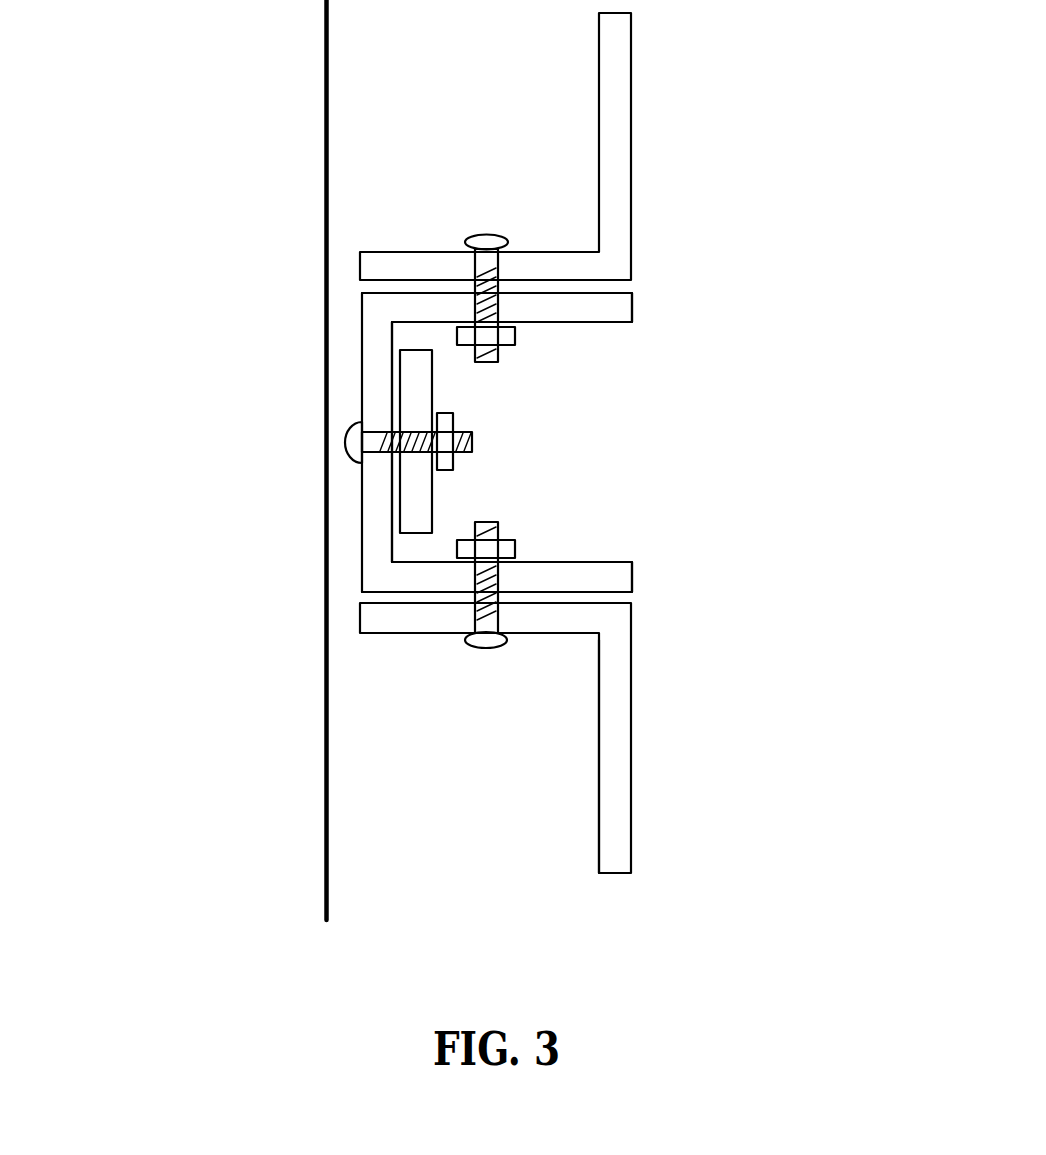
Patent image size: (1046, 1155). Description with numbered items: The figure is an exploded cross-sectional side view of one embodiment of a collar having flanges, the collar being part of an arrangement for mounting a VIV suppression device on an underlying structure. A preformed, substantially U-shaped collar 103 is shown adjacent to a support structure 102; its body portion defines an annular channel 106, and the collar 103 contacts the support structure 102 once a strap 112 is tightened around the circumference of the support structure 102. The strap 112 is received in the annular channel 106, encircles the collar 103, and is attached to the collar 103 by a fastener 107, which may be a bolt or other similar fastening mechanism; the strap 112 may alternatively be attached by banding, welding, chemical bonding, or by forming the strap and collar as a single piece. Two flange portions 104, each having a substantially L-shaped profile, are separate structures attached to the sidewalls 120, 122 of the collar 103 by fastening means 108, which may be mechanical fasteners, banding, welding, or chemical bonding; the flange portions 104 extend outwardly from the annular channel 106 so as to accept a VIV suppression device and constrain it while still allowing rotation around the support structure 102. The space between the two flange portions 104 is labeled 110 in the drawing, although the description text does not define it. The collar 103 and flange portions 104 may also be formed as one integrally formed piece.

The support structure 102 is at (318, 272).
The collar 103 is at (623, 442).
The flange portions 104 is at (637, 100).
The annular channel 106 is at (497, 475).
The fastener 107 is at (333, 440).
The fastening means 108 is at (510, 240).
The gap between brackets 110 is at (485, 752).
The strap 112 is at (408, 495).
The sidewall 120 is at (580, 333).
The sidewall 122 is at (593, 558).